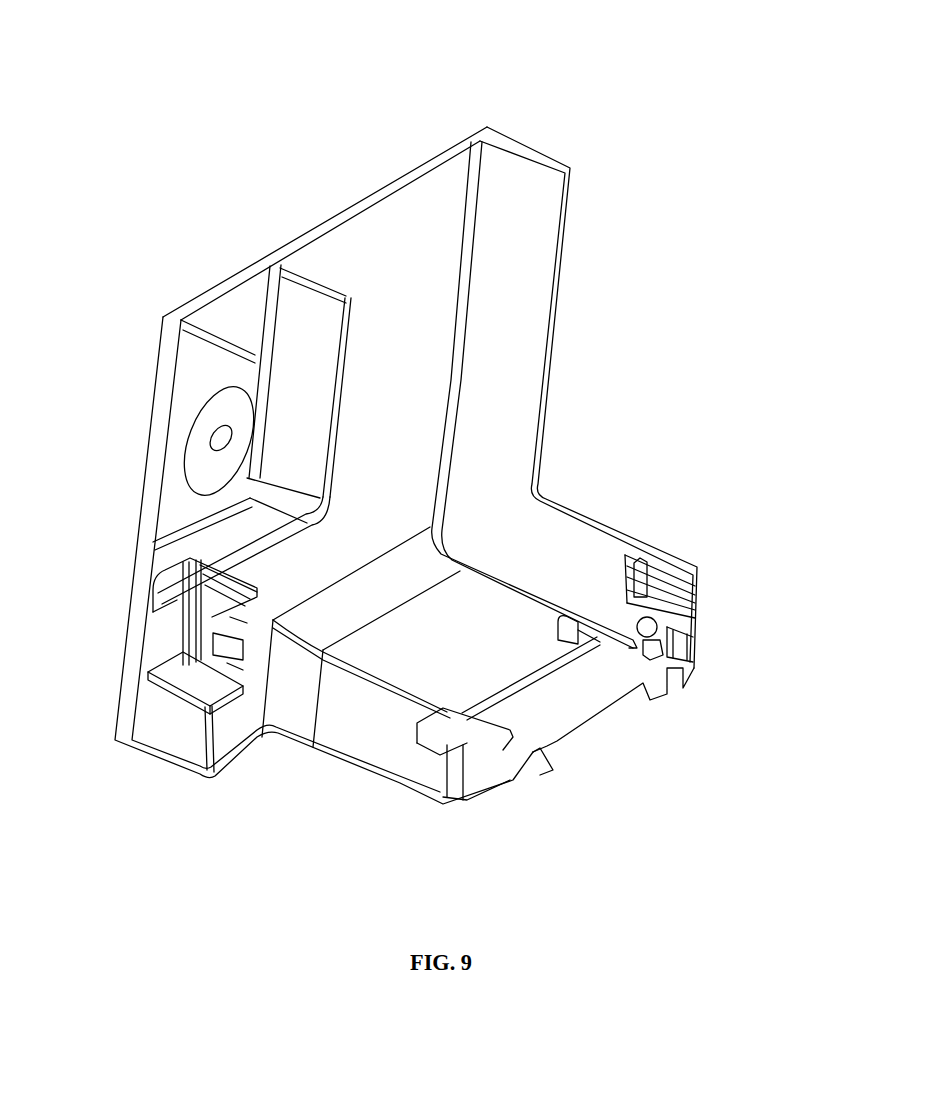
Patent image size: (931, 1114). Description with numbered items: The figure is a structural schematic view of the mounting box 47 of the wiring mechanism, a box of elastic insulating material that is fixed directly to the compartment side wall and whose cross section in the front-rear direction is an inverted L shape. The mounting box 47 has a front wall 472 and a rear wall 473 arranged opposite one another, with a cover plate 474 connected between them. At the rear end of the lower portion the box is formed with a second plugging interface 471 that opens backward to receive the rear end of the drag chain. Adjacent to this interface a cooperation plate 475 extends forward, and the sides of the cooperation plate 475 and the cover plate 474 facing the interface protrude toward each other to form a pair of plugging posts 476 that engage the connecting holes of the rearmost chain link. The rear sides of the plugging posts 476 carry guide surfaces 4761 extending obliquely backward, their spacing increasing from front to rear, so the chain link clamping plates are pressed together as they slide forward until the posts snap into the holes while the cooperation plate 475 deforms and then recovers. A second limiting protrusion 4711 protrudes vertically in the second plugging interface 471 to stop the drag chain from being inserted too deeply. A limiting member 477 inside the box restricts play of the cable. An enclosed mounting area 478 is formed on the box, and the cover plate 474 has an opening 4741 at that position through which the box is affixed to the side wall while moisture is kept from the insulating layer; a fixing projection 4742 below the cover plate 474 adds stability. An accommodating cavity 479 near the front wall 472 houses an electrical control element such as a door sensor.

The mounting box 47 is at (433, 53).
The second plugging interface 471 is at (623, 557).
The second limiting protrusion 4711 is at (652, 560).
The front wall 472 is at (160, 745).
The rear wall 473 is at (540, 278).
The cover plate 474 is at (424, 277).
The opening 4741 is at (212, 440).
The fixing projection 4742 is at (540, 776).
The cooperation plate 475 is at (560, 645).
The plugging posts 476 is at (690, 630).
The guide surfaces 4761 is at (695, 600).
The limiting member 477 is at (440, 750).
The mounting area 478 is at (205, 367).
The accommodating cavity 479 is at (197, 630).